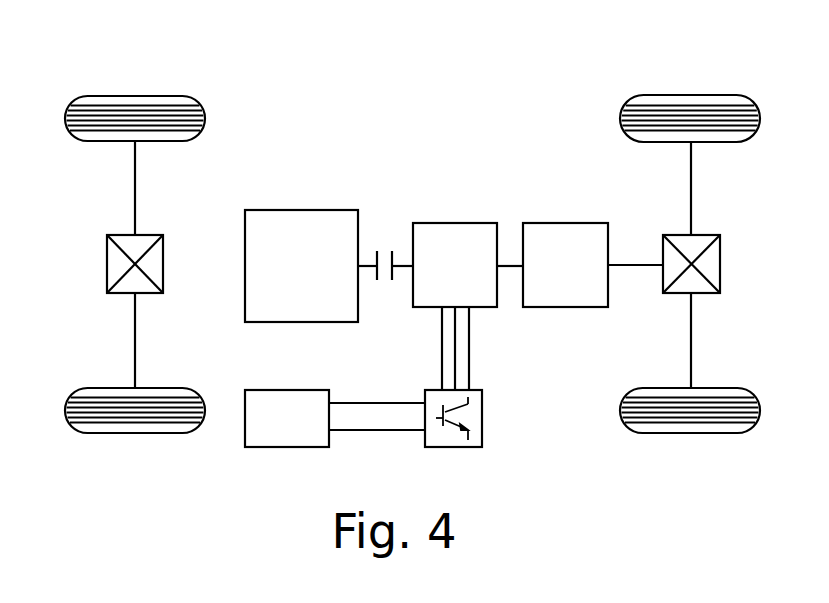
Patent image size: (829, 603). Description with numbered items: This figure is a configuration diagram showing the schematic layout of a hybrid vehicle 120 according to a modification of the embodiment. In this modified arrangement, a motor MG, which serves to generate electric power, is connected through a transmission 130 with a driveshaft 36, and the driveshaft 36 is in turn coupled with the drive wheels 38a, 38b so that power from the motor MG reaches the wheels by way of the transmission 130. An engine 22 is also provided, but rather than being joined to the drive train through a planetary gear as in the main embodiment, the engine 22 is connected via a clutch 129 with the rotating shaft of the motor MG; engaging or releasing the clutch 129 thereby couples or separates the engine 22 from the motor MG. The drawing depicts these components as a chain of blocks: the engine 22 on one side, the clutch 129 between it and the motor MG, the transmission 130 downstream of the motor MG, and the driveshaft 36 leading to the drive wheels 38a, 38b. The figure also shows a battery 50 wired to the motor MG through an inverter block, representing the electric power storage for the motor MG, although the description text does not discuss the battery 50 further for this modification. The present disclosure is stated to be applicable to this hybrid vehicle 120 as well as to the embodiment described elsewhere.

The engine 22 is at (303, 209).
The clutch 129 is at (384, 250).
The motor MG is at (456, 222).
The transmission 130 is at (568, 222).
The driveshaft 36 is at (636, 264).
The drive wheel 38a is at (692, 95).
The drive wheel 38b is at (690, 434).
The battery 50 is at (285, 389).
The hybrid vehicle 120 is at (545, 80).